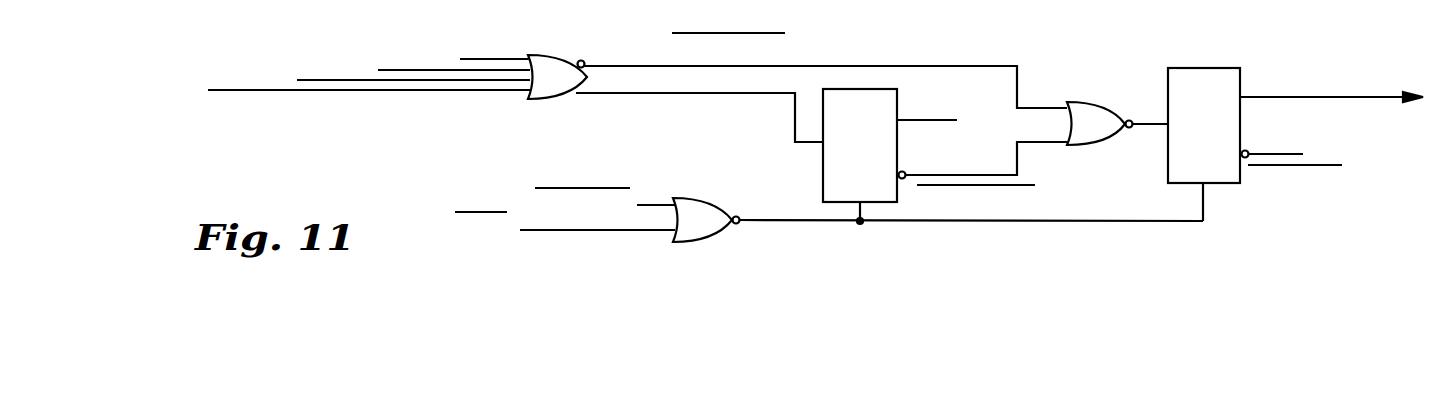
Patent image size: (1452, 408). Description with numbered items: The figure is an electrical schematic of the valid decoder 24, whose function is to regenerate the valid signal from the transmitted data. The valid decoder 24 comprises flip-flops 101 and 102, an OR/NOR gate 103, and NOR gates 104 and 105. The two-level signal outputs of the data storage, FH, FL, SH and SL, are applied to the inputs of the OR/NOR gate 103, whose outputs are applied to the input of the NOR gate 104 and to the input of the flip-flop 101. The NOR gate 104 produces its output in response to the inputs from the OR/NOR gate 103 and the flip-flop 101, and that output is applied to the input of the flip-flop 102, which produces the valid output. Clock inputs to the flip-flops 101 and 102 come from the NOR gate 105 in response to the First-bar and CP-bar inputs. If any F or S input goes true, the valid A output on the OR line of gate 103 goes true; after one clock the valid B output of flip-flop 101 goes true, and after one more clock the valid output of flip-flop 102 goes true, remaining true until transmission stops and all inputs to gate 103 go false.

The valid decoder 24 is at (815, 144).
The flip-flop 101 is at (823, 184).
The flip-flop 102 is at (1168, 155).
The OR/NOR gate 103 is at (543, 102).
The NOR gate 104 is at (1117, 91).
The NOR gate 105 is at (712, 182).